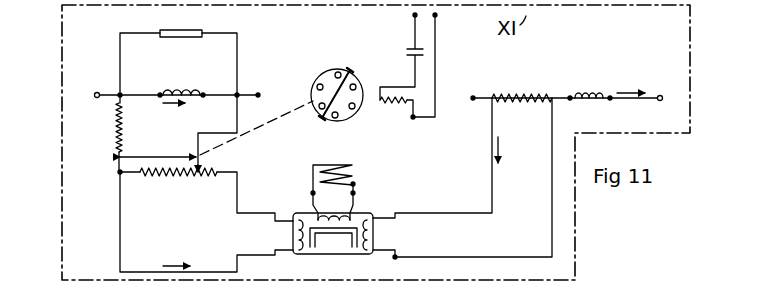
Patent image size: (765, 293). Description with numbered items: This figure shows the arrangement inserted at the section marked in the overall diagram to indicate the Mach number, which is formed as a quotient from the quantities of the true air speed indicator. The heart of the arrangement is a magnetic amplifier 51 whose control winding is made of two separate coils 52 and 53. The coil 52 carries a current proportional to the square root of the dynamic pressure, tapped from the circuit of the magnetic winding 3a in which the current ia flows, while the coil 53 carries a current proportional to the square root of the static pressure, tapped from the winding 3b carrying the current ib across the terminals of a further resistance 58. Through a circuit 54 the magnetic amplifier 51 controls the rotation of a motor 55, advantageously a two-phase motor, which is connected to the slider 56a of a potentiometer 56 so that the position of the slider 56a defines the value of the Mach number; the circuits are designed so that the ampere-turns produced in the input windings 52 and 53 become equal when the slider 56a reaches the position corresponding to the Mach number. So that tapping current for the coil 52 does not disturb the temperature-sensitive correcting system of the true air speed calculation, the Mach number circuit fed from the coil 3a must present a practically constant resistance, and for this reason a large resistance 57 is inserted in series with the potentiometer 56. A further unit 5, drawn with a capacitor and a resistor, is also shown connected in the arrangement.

The magnetic winding 3a is at (170, 92).
The magnetic winding 3b is at (583, 95).
The capacitor-resistor unit 5 is at (415, 66).
The magnetic amplifier 51 is at (337, 247).
The coil 52 is at (295, 235).
The coil 53 is at (375, 235).
The circuit 54 is at (340, 165).
The motor 55 is at (330, 72).
The potentiometer 56 is at (148, 178).
The slider 56a is at (197, 152).
The large resistance 57 is at (112, 124).
The further resistance 58 is at (521, 101).
The current ia is at (167, 112).
The current ib is at (631, 78).